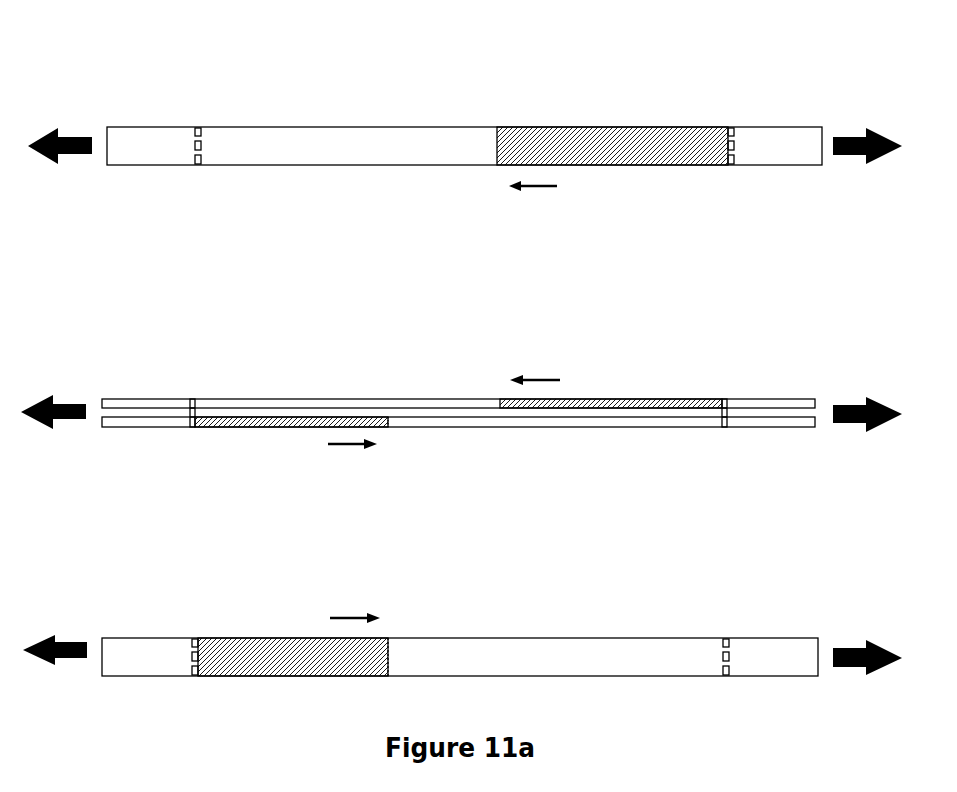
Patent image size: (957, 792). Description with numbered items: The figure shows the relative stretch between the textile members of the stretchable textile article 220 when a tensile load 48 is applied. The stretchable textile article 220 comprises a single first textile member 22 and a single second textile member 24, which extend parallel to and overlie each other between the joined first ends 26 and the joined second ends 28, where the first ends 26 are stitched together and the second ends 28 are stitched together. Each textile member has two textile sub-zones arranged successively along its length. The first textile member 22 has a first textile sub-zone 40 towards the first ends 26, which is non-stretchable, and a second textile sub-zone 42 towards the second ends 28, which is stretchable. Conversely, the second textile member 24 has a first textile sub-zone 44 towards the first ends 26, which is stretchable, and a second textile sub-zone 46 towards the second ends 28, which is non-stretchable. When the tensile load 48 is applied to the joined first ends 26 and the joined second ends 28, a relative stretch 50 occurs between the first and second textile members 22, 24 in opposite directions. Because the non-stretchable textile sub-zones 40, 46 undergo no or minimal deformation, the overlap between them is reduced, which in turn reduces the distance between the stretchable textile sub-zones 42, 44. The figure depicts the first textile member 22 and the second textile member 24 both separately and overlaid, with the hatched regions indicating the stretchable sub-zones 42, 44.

The stretchable textile article 220 is at (461, 353).
The first textile member 22 is at (390, 124).
The second textile member 24 is at (524, 429).
The joined first ends 26 is at (196, 124).
The joined second ends 28 is at (732, 125).
The first textile sub-zone of the first textile member 40 is at (347, 142).
The second textile sub-zone of the first textile member 42 is at (604, 143).
The first textile sub-zone of the second textile member 44 is at (298, 429).
The second textile sub-zone of the second textile member 46 is at (547, 429).
The tensile load 48 is at (461, 386).
The relative stretch 50 is at (444, 402).